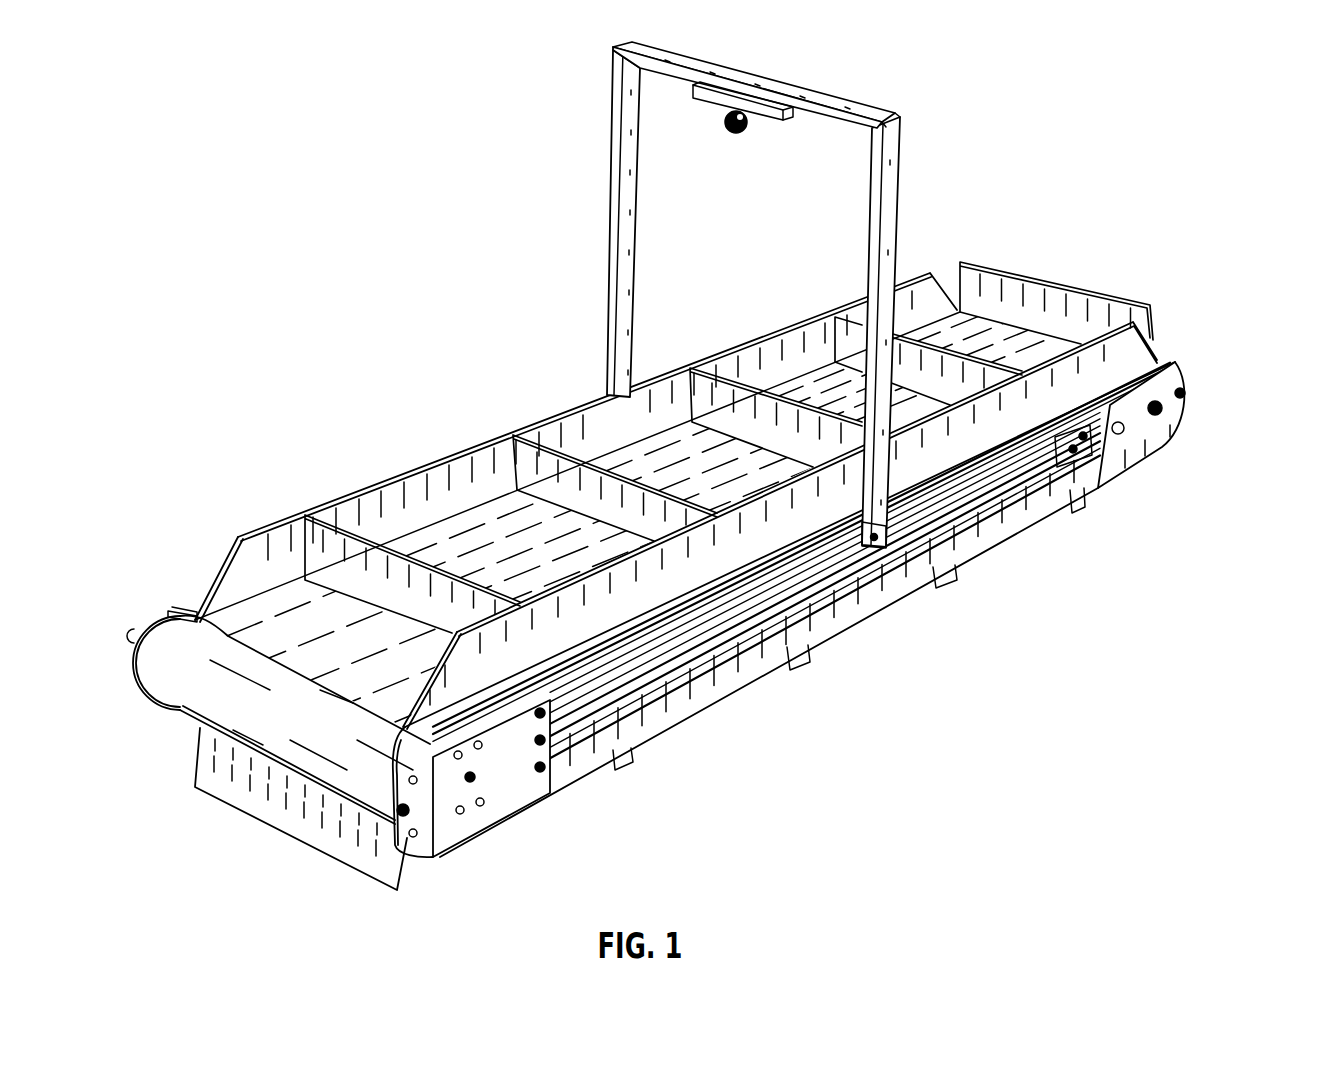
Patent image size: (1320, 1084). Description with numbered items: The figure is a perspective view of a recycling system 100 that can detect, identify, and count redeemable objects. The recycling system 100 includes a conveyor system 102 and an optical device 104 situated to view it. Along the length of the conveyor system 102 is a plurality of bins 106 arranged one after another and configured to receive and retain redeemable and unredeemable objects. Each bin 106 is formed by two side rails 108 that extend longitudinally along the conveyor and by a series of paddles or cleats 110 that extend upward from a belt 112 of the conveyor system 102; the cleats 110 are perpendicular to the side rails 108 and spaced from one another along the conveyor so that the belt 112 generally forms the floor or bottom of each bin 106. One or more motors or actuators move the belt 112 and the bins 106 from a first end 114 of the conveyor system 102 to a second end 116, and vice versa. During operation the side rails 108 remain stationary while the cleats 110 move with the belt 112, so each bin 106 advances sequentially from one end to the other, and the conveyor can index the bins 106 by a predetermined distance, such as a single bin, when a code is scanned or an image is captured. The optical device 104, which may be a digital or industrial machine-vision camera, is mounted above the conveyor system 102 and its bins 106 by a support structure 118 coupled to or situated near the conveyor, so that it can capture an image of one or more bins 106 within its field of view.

The recycling system 100 is at (699, 473).
The conveyor system 102 is at (676, 469).
The optical device 104 is at (733, 133).
The bin 106 is at (495, 535).
The side rail 108 is at (727, 348).
The cleat 110 is at (337, 523).
The belt 112 is at (290, 605).
The first end 114 is at (420, 820).
The second end 116 is at (1187, 377).
The support structure 118 is at (795, 295).